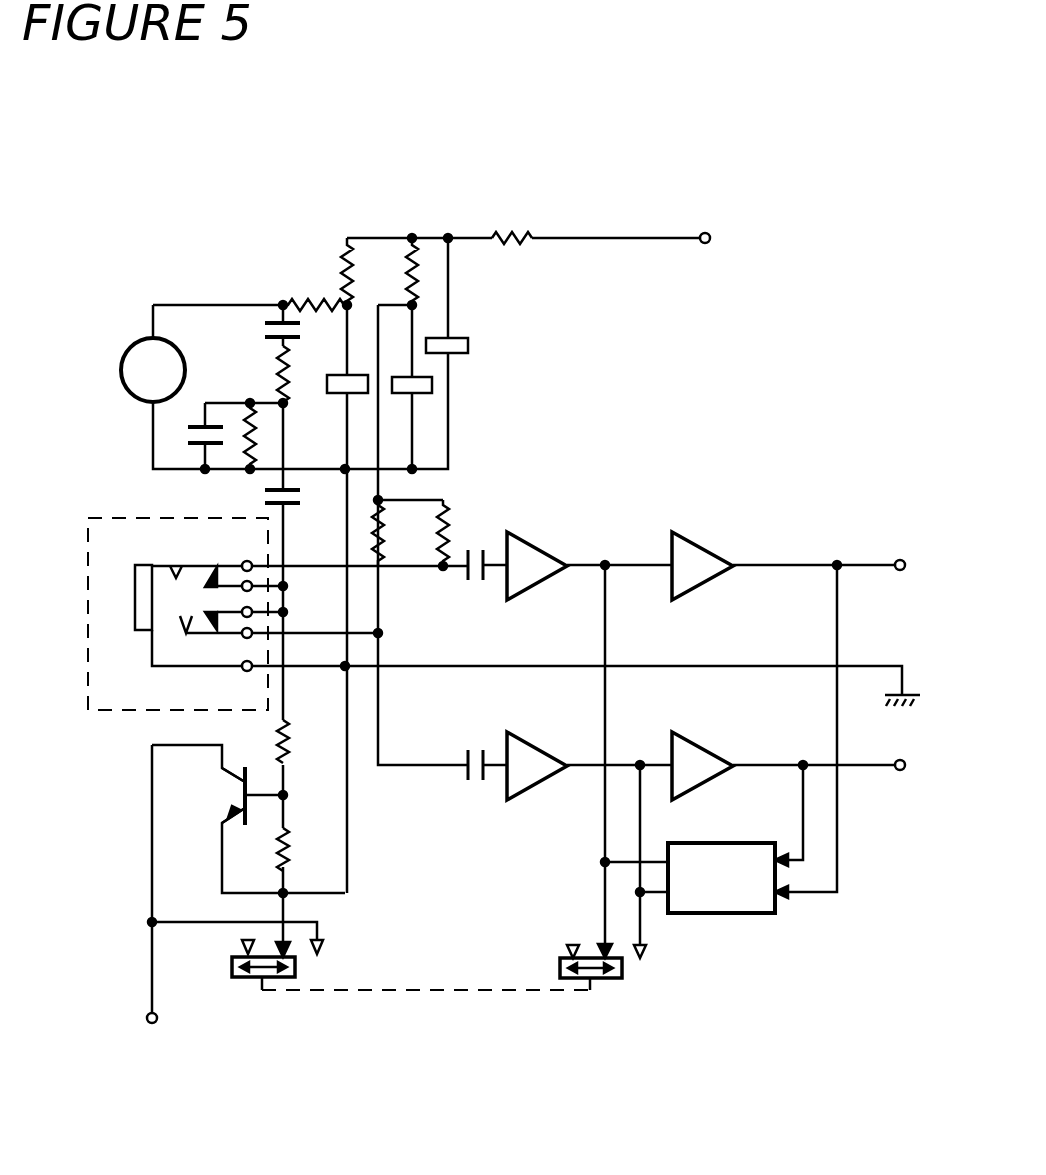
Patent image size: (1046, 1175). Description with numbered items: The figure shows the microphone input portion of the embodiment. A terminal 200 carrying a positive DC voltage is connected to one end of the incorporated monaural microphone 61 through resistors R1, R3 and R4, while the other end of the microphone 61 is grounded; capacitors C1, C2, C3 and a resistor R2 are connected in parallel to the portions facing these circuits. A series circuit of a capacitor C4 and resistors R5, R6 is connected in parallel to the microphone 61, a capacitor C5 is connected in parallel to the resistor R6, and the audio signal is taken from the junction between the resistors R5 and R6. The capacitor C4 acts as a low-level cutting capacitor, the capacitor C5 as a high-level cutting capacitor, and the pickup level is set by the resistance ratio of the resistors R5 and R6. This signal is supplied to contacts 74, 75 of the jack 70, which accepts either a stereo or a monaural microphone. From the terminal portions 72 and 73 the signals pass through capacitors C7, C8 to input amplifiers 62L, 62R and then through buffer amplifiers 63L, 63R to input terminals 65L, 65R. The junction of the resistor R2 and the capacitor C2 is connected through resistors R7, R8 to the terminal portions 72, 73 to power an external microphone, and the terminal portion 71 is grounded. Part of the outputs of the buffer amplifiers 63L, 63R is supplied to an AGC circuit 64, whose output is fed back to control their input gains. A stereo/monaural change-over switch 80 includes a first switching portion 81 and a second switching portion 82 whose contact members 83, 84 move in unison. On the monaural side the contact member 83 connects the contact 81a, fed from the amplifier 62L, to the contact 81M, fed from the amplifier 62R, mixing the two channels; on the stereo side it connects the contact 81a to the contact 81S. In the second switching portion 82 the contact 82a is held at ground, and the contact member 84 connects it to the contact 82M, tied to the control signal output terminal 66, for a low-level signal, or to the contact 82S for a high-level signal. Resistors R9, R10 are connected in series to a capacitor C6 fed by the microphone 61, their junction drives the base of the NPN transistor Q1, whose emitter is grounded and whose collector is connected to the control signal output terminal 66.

The incorporated microphone 61 is at (140, 343).
The resistor R1 is at (501, 232).
The resistor R2 is at (410, 284).
The resistor R3 is at (343, 275).
The resistor R4 is at (305, 298).
The resistor R5 is at (274, 371).
The resistor R6 is at (262, 438).
The resistor R7 is at (447, 540).
The resistor R8 is at (398, 528).
The resistor R9 is at (297, 731).
The resistor R10 is at (295, 847).
The capacitor C1 is at (468, 345).
The capacitor C2 is at (432, 385).
The capacitor C3 is at (328, 382).
The capacitor C4 is at (262, 332).
The capacitor C5 is at (200, 440).
The capacitor C6 is at (302, 498).
The capacitor C7 is at (471, 584).
The capacitor C8 is at (471, 784).
The NPN transistor Q1 is at (232, 796).
The terminal 200 is at (709, 234).
The jack 70 is at (75, 545).
The terminal portion 71 is at (135, 590).
The terminal portion 72 is at (177, 572).
The terminal portion 73 is at (184, 634).
The contact 74 is at (211, 570).
The contact 75 is at (218, 632).
The input amplifier 62L is at (558, 548).
The buffer amplifier 63L is at (726, 546).
The input terminal 65L is at (896, 560).
The input amplifier 62R is at (546, 744).
The buffer amplifier 63R is at (726, 746).
The input terminal 65R is at (897, 771).
The AGC circuit 64 is at (740, 843).
The control signal output terminal 66 is at (151, 1024).
The stereo/monaural change-over switch 80 is at (430, 992).
The first switching portion 81 is at (611, 998).
The contact 81S is at (571, 935).
The contact 81M is at (647, 951).
The contact 81a is at (622, 960).
The second switching portion 82 is at (288, 1006).
The contact 82S is at (243, 947).
The contact 82M is at (325, 945).
The contact 82a is at (295, 958).
The contact member 83 is at (560, 968).
The contact member 84 is at (245, 978).